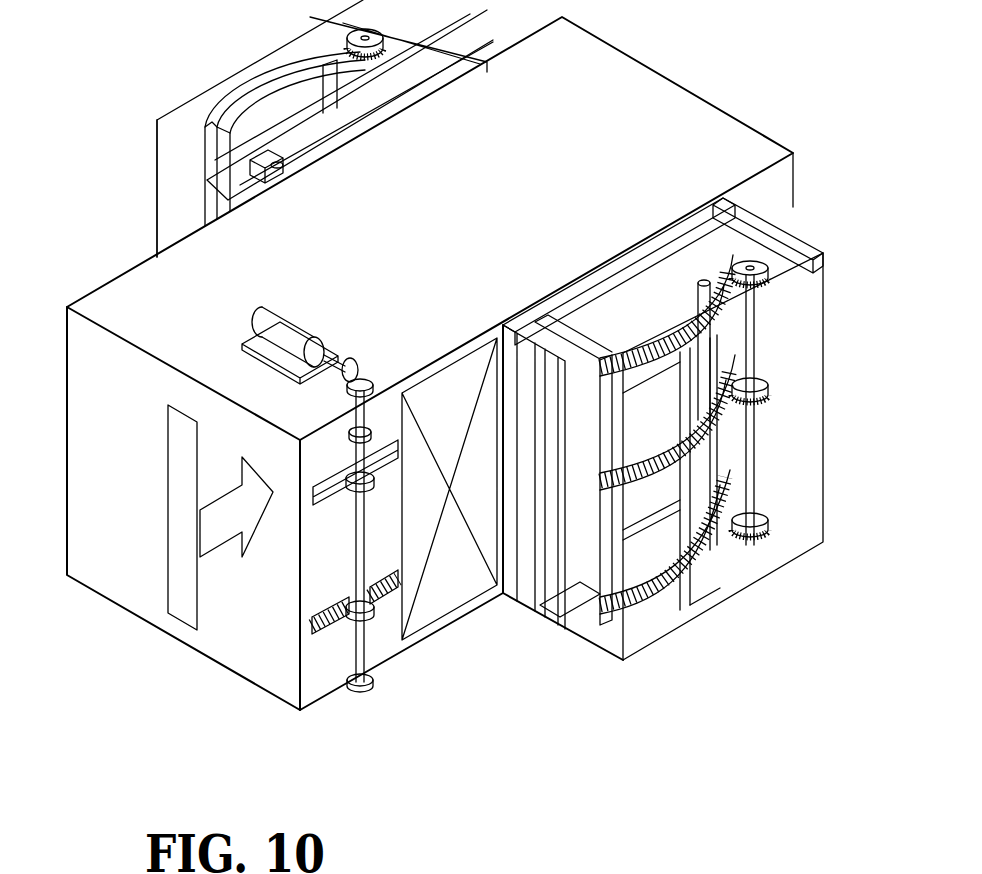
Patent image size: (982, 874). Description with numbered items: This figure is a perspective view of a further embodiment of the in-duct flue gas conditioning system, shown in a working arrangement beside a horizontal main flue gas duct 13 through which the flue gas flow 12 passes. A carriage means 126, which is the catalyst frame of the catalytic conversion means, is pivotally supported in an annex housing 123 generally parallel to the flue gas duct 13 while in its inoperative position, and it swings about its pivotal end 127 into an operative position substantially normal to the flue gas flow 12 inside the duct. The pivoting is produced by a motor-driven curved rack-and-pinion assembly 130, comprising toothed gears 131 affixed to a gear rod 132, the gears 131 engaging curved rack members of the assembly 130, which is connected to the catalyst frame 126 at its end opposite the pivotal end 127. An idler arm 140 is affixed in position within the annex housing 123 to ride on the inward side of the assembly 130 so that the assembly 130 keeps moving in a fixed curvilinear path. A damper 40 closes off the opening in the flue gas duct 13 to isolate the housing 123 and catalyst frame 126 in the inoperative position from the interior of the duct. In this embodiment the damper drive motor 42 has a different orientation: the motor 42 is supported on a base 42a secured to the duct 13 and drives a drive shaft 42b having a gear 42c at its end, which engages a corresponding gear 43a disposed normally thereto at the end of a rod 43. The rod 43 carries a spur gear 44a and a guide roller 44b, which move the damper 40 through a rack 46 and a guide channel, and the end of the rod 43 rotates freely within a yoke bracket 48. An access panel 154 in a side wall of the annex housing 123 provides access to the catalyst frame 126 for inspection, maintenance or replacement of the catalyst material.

The flue gas flow 12 is at (215, 555).
The flue gas duct 13 is at (118, 300).
The damper 40 is at (470, 335).
The damper drive motor 42 is at (303, 324).
The base 42a is at (255, 332).
The drive shaft 42b is at (338, 358).
The gear 42c is at (358, 370).
The rod 43 is at (340, 556).
The gear 43a is at (345, 388).
The spur gear 44a is at (352, 620).
The guide roller 44b is at (352, 495).
The rack 46 is at (385, 571).
The yoke bracket 48 is at (350, 434).
The annex housing 123 is at (800, 560).
The carriage means 126 is at (648, 262).
The pivotal end 127 is at (540, 320).
The curved rack-and-pinion assembly 130 is at (727, 578).
The toothed gears 131 is at (770, 490).
The gear rod 132 is at (765, 342).
The idler arm 140 is at (390, 95).
The access panel 154 is at (580, 600).